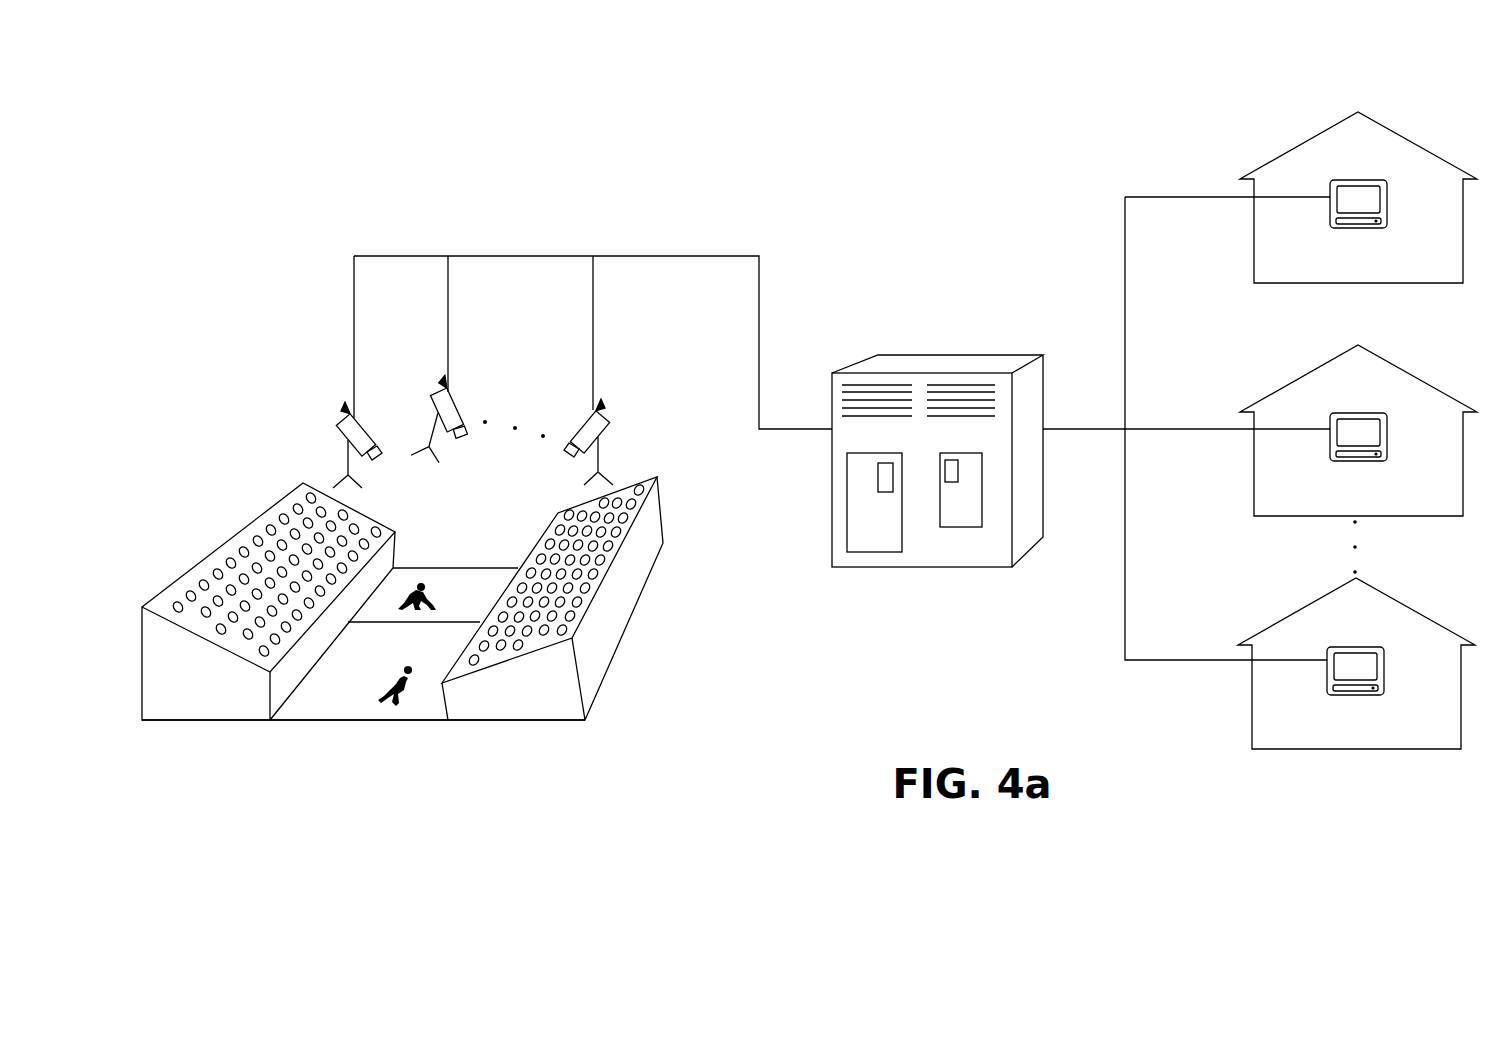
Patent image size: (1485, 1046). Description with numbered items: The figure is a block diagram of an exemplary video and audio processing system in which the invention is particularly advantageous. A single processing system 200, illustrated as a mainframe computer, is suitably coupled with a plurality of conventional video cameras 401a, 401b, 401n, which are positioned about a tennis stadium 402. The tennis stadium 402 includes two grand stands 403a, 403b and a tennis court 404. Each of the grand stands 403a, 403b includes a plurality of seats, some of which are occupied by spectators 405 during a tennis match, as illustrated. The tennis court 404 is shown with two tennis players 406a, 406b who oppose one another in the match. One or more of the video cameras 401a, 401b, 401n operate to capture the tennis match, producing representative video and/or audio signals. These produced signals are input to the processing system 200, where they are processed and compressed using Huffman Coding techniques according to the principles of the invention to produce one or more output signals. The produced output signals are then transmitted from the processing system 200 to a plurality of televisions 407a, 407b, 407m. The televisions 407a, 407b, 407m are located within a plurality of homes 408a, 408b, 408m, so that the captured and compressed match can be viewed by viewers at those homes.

The processing system 200 is at (968, 355).
The video camera 401a is at (338, 432).
The video camera 401b is at (456, 400).
The video camera 401n is at (612, 424).
The tennis stadium 402 is at (587, 772).
The grand stand 403a is at (270, 735).
The grand stand 403b is at (448, 735).
The tennis court 404 is at (448, 735).
The spectators 405 is at (266, 516).
The tennis player 406a is at (383, 700).
The tennis player 406b is at (436, 600).
The television 407a is at (1358, 191).
The television 407b is at (1358, 424).
The television 407m is at (1355, 658).
The home 408a is at (1280, 152).
The home 408b is at (1280, 385).
The home 408m is at (1280, 618).